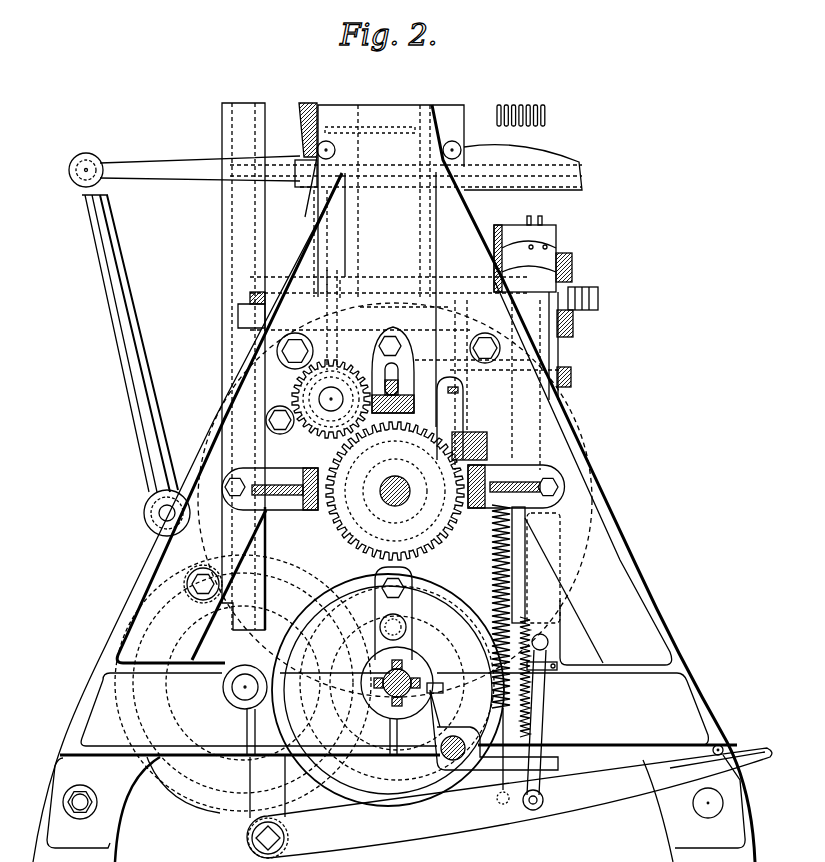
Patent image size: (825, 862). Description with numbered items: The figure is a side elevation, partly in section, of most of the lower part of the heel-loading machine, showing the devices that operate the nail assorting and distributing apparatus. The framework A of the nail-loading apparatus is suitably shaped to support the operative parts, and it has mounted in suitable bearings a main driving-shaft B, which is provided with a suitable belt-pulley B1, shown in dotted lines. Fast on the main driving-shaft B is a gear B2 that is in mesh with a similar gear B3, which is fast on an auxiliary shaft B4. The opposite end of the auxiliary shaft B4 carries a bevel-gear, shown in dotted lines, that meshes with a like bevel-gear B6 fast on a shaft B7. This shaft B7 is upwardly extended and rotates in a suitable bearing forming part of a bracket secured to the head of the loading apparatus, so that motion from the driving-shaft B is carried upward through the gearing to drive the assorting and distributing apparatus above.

The framework A is at (216, 410).
The main driving-shaft B is at (397, 472).
The belt-pulley B1 is at (306, 425).
The gear B2 is at (348, 522).
The gear B3 is at (293, 390).
The auxiliary shaft B4 is at (381, 480).
The bevel-gear B6 is at (396, 290).
The shaft B7 is at (309, 106).